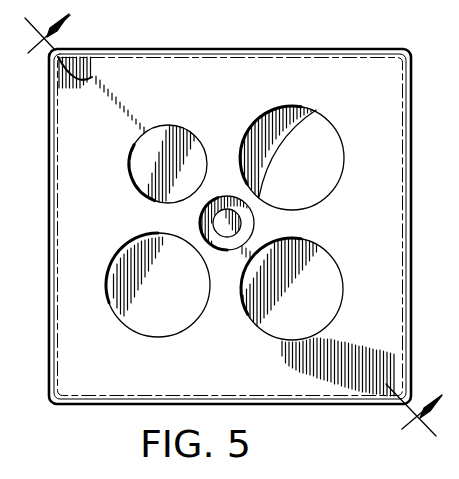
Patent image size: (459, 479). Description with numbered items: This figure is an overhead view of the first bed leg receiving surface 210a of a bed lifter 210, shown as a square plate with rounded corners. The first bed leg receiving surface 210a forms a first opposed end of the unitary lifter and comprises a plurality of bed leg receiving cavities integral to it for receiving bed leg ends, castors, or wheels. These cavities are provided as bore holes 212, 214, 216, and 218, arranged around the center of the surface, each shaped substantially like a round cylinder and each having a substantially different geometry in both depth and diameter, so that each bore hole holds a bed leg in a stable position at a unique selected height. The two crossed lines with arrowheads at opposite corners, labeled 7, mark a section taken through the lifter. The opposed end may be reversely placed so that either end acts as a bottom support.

The cover plate 210 is at (100, 403).
The first bed leg receiving surface 210a is at (156, 383).
The bore hole 212 is at (317, 133).
The bore hole 214 is at (167, 120).
The bore hole 216 is at (284, 317).
The bore hole 218 is at (186, 310).
The section line for FIG. 7 is at (233, 221).